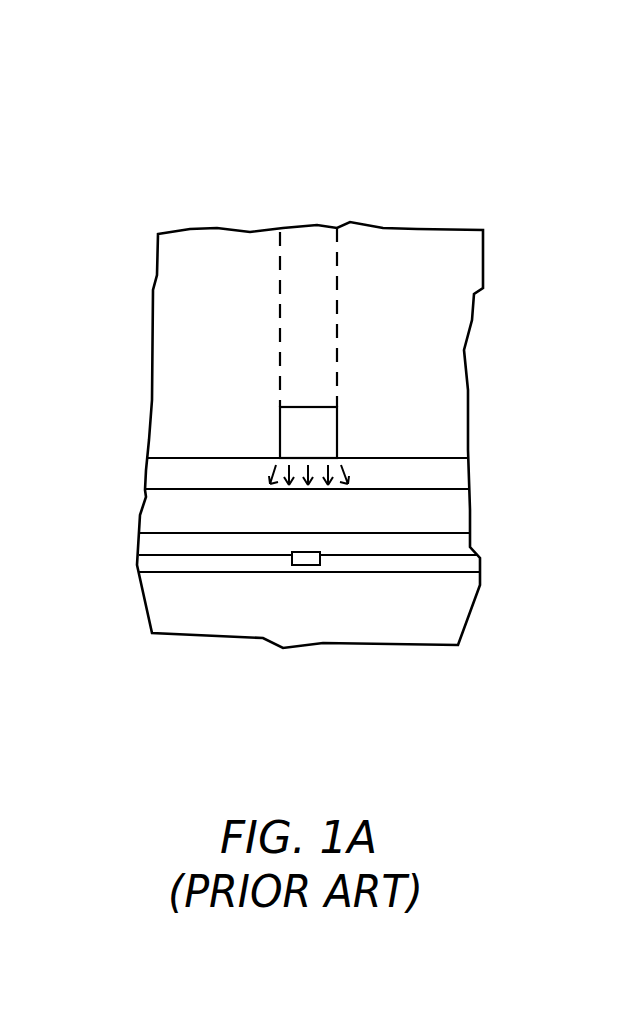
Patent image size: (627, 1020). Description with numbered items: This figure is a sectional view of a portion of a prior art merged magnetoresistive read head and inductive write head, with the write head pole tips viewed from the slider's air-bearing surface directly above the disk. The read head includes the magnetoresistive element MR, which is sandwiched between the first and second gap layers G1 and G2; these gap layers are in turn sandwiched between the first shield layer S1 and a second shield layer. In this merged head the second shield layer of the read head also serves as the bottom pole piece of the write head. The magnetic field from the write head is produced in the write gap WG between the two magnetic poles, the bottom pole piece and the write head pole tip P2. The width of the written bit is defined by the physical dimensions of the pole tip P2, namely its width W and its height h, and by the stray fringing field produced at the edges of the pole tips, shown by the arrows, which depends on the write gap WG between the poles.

The width W is at (395, 190).
The height h is at (280, 407).
The write head pole tip P2 is at (315, 430).
The write gap WG is at (437, 474).
The second gap layer G2 is at (153, 542).
The first gap layer G1 is at (160, 565).
The first shield layer S1 is at (437, 608).
The magnetoresistive element MR is at (302, 566).